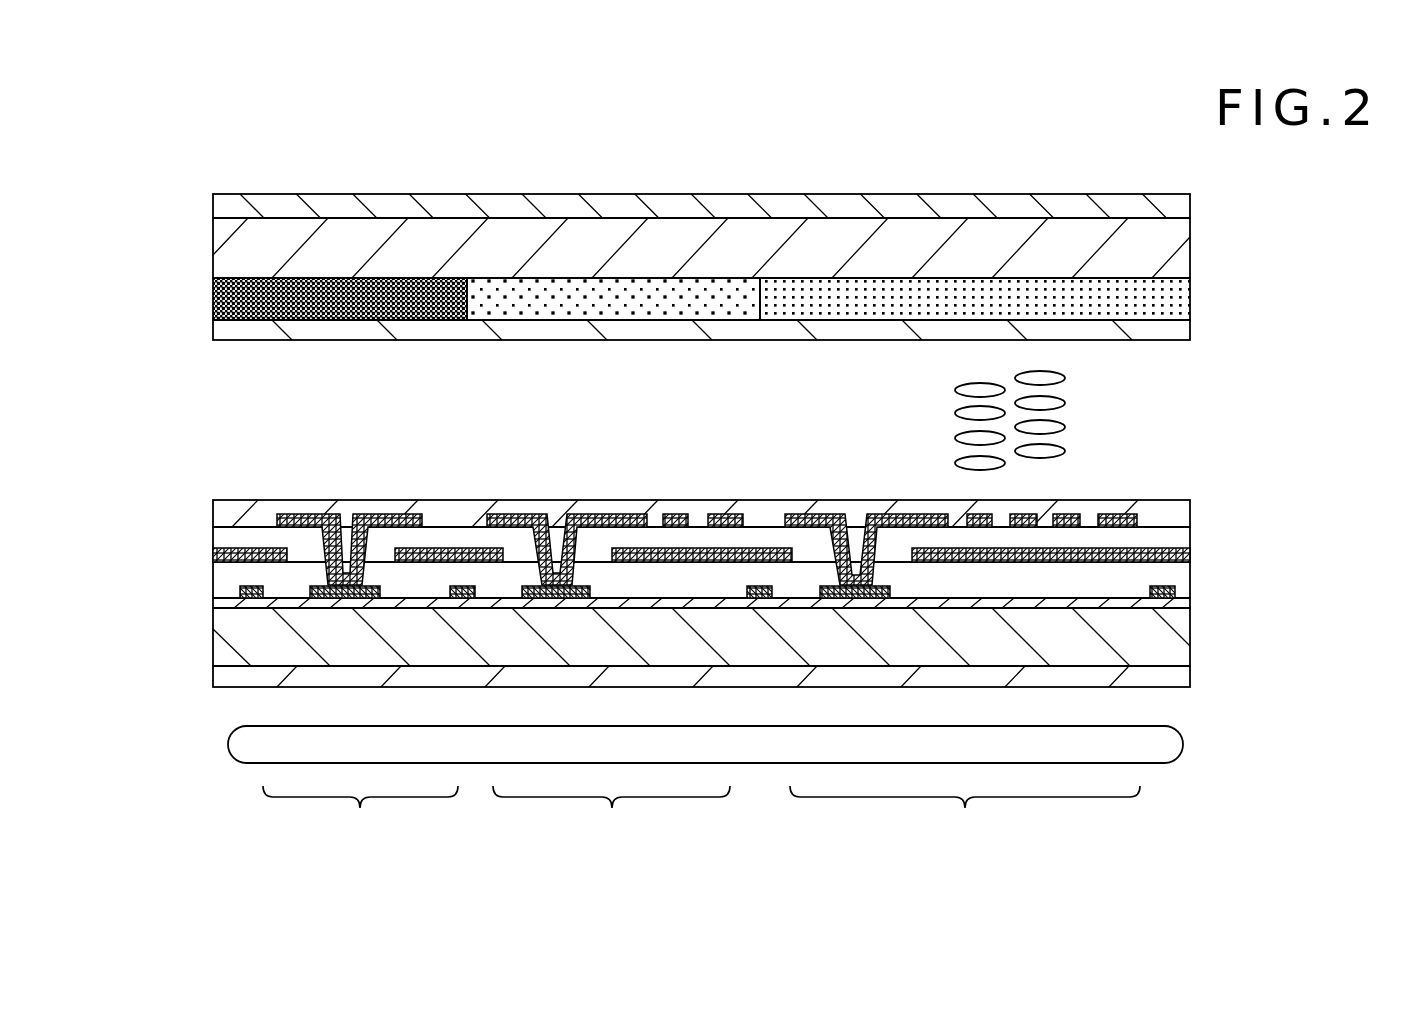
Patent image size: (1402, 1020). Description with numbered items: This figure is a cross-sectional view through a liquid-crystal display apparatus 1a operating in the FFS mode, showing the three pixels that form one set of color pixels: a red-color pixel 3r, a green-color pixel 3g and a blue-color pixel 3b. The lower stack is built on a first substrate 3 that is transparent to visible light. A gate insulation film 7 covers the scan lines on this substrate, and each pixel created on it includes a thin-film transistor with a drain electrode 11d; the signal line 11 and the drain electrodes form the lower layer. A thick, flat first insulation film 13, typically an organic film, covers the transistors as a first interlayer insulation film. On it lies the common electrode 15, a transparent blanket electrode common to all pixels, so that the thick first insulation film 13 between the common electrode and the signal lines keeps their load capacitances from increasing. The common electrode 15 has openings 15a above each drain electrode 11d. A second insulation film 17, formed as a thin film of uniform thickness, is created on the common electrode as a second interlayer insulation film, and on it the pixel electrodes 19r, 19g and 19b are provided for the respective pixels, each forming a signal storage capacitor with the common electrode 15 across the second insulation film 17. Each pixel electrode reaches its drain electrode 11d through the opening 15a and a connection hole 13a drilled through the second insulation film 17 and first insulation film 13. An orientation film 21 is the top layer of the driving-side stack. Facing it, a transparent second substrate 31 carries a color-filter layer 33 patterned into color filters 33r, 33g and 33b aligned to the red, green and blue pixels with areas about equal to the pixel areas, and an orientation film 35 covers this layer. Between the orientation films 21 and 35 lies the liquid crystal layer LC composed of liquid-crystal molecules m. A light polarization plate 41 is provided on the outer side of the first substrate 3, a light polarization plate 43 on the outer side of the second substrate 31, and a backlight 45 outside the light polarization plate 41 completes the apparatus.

The liquid-crystal display apparatus 1a is at (213, 155).
The light polarization plate 43 is at (1066, 194).
The second substrate 31 is at (1152, 220).
The color-filter layer 33 is at (1190, 297).
The color filter 33r is at (294, 278).
The color filter 33g is at (554, 278).
The color filter 33b is at (895, 278).
The orientation film 35 is at (1190, 338).
The liquid crystal layer LC is at (1120, 423).
The liquid-crystal molecules m is at (955, 390).
The orientation film 21 is at (248, 500).
The pixel electrode 19r is at (305, 514).
The pixel electrode 19g is at (725, 514).
The pixel electrode 19b is at (1118, 514).
The connection hole 13a is at (367, 576).
The second insulation film 17 is at (1190, 540).
The common electrode 15 is at (1190, 558).
The opening 15a is at (307, 562).
The first insulation film 13 is at (1190, 585).
The signal line 11 is at (252, 598).
The drain electrode 11d is at (346, 598).
The gate insulation film 7 is at (1190, 605).
The first substrate 3 is at (1190, 640).
The light polarization plate 41 is at (1190, 680).
The backlight 45 is at (1184, 745).
The red-color pixel 3r is at (360, 814).
The green-color pixel 3g is at (611, 814).
The blue-color pixel 3b is at (965, 814).